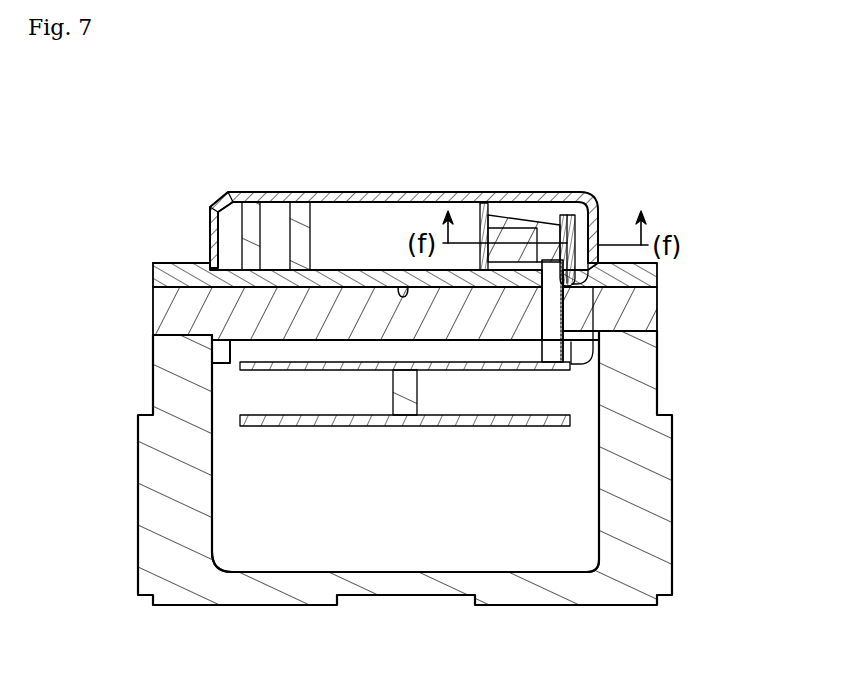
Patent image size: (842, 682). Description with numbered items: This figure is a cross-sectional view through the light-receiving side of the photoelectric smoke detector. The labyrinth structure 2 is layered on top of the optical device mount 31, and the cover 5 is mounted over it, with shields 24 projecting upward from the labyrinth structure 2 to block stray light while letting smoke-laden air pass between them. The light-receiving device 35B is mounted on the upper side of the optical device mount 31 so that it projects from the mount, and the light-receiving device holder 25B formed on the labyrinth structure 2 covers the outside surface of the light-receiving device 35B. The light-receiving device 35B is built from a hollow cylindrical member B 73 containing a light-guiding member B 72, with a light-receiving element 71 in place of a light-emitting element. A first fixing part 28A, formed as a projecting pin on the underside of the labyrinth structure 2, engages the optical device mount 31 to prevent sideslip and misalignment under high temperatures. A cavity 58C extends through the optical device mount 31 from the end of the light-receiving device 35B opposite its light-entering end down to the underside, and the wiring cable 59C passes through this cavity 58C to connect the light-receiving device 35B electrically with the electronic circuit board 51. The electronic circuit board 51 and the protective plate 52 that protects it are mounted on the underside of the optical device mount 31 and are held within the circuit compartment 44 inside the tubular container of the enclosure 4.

The labyrinth structure 2 is at (163, 280).
The enclosure 4 is at (647, 562).
The cover 5 is at (152, 262).
The shields 24 is at (243, 213).
The light-receiving device holder 25B is at (492, 215).
The first fixing part 28A is at (403, 288).
The optical device mount 31 is at (160, 318).
The light-receiving device 35B is at (633, 162).
The circuit compartment 44 is at (245, 540).
The electronic circuit board 51 is at (240, 368).
The protective plate 52 is at (452, 194).
The cavity 58C is at (550, 340).
The wiring cable 59C is at (562, 327).
The light-receiving element 71 is at (668, 188).
The light-guiding member B 72 is at (555, 218).
The hollow cylindrical member B 73 is at (488, 212).